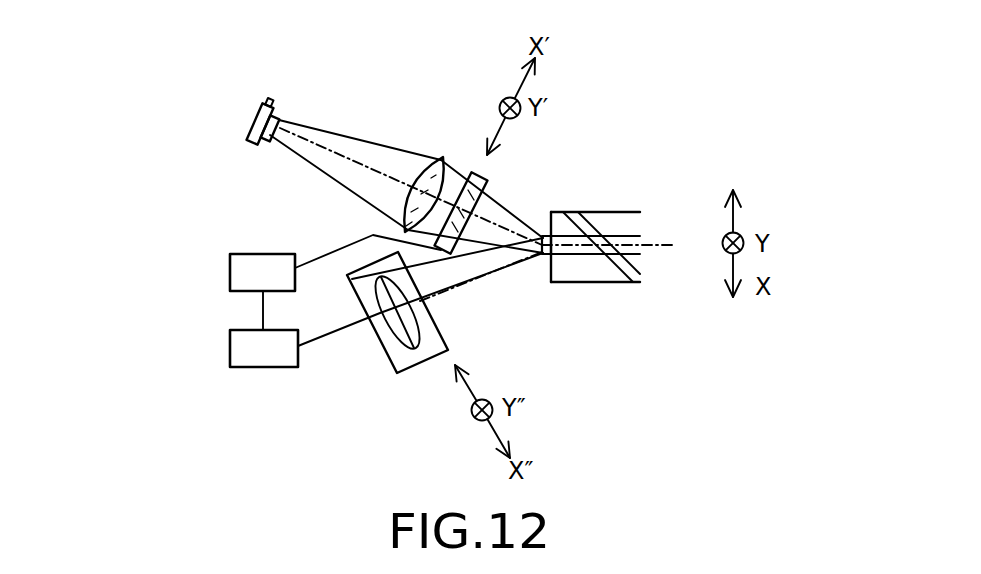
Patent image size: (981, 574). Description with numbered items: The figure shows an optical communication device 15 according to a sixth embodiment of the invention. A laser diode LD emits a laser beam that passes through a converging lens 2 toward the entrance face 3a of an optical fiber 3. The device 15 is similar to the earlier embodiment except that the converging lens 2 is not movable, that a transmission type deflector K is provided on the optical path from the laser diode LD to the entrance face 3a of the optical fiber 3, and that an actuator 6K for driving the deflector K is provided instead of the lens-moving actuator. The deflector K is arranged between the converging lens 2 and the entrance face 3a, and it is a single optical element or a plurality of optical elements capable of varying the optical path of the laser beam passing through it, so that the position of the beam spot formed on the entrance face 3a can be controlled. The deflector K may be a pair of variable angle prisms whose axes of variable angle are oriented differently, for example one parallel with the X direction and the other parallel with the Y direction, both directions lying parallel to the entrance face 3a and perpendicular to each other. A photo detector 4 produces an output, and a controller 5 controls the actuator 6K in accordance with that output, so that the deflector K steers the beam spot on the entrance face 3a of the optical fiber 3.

The laser diode LD is at (263, 105).
The optical communication device 15 is at (381, 88).
The converging lens 2 is at (443, 156).
The transmission type deflector K is at (487, 178).
The entrance face 3a is at (551, 233).
The optical fiber 3 is at (606, 272).
The photo detector 4 is at (403, 364).
The controller 5 is at (230, 350).
The actuator 6K is at (230, 270).